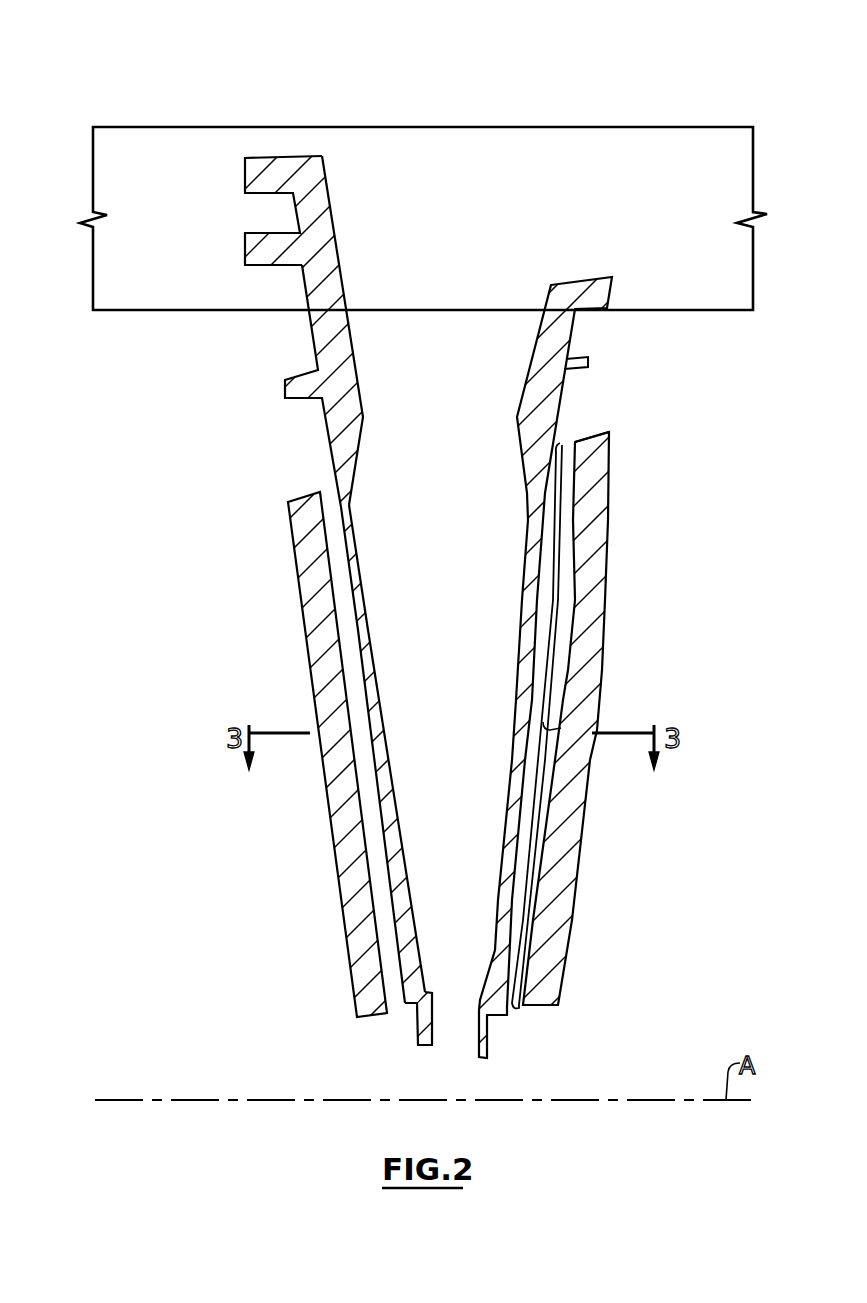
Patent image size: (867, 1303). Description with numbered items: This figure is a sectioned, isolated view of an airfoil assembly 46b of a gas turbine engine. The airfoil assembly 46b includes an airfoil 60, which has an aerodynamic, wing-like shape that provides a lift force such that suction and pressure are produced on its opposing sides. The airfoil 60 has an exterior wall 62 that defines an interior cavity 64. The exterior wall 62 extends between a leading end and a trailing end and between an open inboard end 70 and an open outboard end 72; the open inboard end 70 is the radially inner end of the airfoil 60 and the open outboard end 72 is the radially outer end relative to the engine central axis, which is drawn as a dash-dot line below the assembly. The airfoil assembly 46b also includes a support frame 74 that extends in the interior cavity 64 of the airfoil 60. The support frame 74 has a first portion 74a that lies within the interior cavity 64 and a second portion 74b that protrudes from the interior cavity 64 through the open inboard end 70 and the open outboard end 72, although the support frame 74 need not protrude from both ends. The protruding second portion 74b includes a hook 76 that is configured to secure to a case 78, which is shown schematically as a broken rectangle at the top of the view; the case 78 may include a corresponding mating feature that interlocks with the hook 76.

The case 78 is at (613, 127).
The hook 76 is at (243, 213).
The second portion 74b is at (208, 160).
The support frame 74 is at (555, 598).
The first portion 74a is at (548, 728).
The open outboard end 72 is at (595, 420).
The open inboard end 70 is at (382, 1036).
The interior cavity 64 is at (366, 778).
The exterior wall 62 is at (578, 870).
The airfoil 60 is at (322, 918).
The airfoil assembly 46b is at (195, 861).